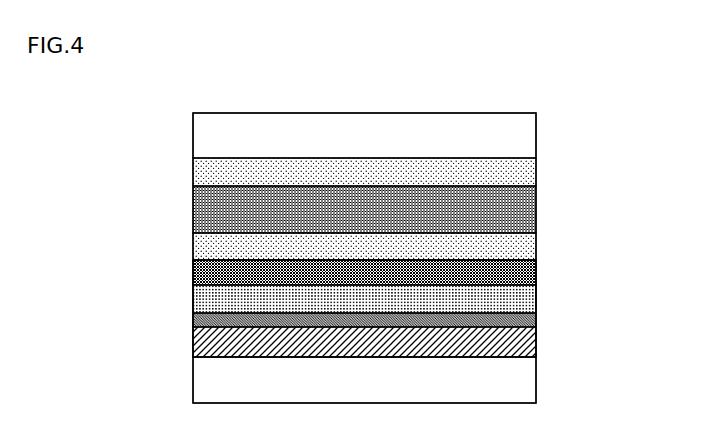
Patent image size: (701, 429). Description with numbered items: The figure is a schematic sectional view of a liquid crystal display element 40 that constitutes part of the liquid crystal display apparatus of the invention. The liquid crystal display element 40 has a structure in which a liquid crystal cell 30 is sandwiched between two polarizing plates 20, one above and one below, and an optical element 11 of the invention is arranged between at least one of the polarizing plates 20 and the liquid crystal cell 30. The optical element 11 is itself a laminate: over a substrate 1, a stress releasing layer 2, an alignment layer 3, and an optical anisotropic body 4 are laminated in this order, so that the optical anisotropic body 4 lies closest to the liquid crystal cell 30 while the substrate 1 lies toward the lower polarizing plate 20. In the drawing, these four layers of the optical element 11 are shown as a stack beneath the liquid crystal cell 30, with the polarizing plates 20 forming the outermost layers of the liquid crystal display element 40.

The liquid crystal display element 40 is at (452, 88).
The polarizing plate 20 is at (513, 127).
The liquid crystal cell 30 is at (633, 162).
The optical element 11 is at (634, 258).
The optical anisotropic body 4 is at (513, 273).
The alignment layer 3 is at (523, 297).
The stress releasing layer 2 is at (510, 320).
The substrate 1 is at (520, 338).